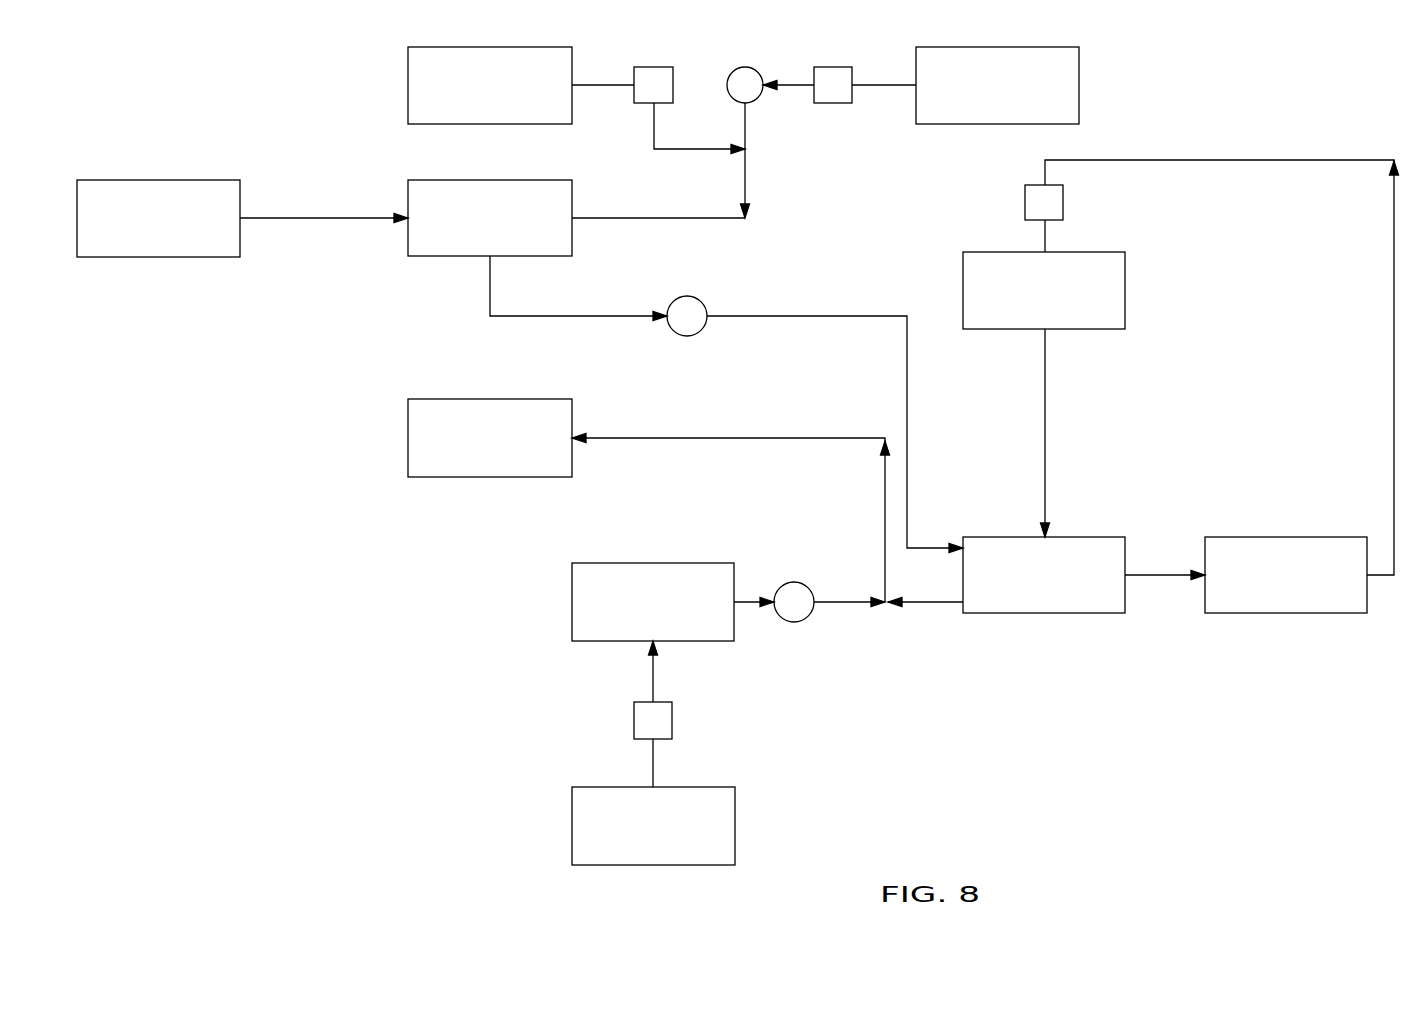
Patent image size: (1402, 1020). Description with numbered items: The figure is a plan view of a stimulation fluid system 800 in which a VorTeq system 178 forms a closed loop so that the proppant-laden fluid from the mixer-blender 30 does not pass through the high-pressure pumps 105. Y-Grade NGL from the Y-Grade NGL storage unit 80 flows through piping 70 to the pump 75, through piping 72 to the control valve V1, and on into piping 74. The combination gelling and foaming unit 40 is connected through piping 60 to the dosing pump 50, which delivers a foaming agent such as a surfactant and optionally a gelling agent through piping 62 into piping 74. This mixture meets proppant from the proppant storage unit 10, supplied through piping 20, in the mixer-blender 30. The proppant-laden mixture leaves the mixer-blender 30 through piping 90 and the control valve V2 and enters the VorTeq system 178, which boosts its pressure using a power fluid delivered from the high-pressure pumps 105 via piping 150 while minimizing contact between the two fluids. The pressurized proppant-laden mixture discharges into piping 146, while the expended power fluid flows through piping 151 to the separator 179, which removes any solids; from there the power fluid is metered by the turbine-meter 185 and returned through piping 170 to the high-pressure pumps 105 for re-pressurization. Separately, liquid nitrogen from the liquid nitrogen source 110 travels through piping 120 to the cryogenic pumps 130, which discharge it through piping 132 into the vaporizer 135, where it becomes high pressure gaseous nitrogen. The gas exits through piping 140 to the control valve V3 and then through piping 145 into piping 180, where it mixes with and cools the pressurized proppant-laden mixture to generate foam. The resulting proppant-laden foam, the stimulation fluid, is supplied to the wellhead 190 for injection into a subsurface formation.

The stimulation fluid system 800 is at (268, 484).
The proppant storage unit 10 is at (177, 179).
The piping 20 is at (308, 218).
The mixer-blender 30 is at (512, 180).
The combination gelling and foaming unit 40 is at (517, 47).
The dosing pump 50 is at (654, 67).
The piping 60 is at (590, 85).
The piping 62 is at (676, 149).
The control valve V1 is at (745, 67).
The piping 74 is at (624, 218).
The piping 72 is at (802, 85).
The pump 75 is at (830, 67).
The piping 70 is at (873, 85).
The Y-Grade NGL storage unit 80 is at (1007, 47).
The turbine-meter 185 is at (1025, 200).
The piping 170 is at (1320, 160).
The high-pressure pumps 105 is at (1095, 252).
The piping 150 is at (1045, 370).
The piping 90 is at (490, 295).
The control valve V2 is at (682, 296).
The wellhead 190 is at (448, 399).
The piping 180 is at (642, 438).
The vaporizer 135 is at (658, 563).
The piping 140 is at (743, 602).
The control valve V3 is at (798, 582).
The piping 145 is at (837, 602).
The piping 146 is at (917, 602).
The VorTeq system 178 is at (1075, 613).
The piping 151 is at (1157, 575).
The separator 179 is at (1315, 613).
The piping 132 is at (653, 682).
The cryogenic pumps 130 is at (672, 707).
The piping 120 is at (653, 760).
The liquid nitrogen source 110 is at (627, 787).